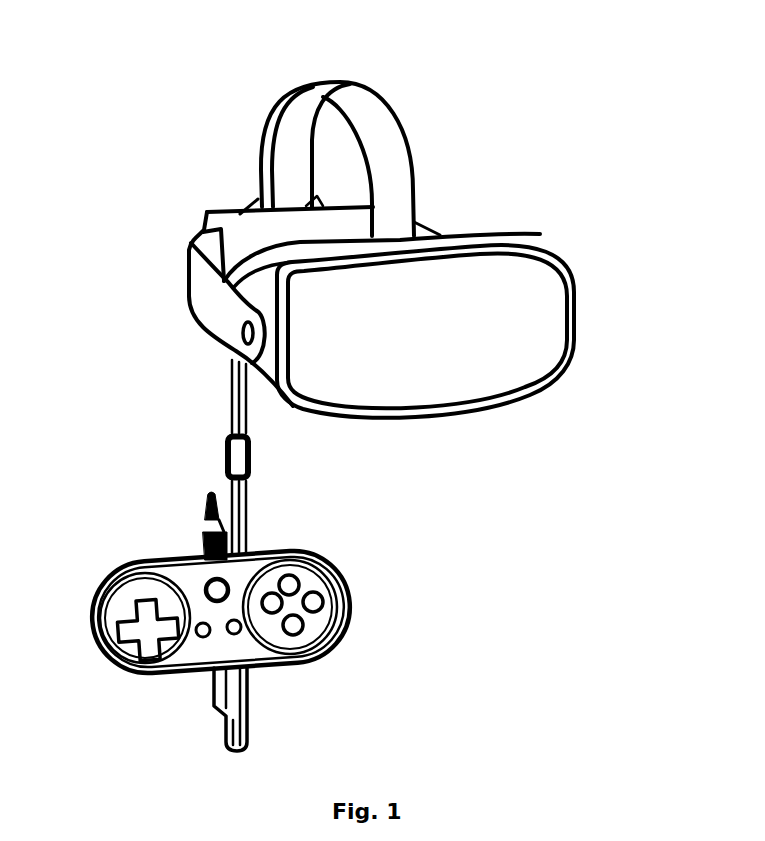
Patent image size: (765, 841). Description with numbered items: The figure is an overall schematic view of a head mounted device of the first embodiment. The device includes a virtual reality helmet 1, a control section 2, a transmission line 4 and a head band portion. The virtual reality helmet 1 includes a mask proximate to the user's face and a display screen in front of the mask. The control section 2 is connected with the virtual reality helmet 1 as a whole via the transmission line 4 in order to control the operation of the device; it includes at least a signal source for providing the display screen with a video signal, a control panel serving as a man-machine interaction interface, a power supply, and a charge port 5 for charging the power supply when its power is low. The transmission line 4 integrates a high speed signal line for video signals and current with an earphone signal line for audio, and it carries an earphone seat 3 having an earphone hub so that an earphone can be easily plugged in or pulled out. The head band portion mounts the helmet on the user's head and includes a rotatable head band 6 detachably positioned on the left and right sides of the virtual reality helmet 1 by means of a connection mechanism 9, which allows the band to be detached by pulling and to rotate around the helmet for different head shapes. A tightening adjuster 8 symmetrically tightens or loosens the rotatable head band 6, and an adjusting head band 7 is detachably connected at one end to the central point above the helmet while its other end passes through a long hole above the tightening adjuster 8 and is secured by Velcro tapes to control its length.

The virtual reality helmet 1 is at (547, 340).
The control section 2 is at (353, 593).
The earphone seat 3 is at (252, 465).
The transmission line 4 is at (232, 395).
The charge port 5 is at (202, 512).
The rotatable head band 6 is at (207, 313).
The adjusting head band 7 is at (377, 113).
The tightening adjuster 8 is at (232, 211).
The connection mechanism 9 is at (292, 322).